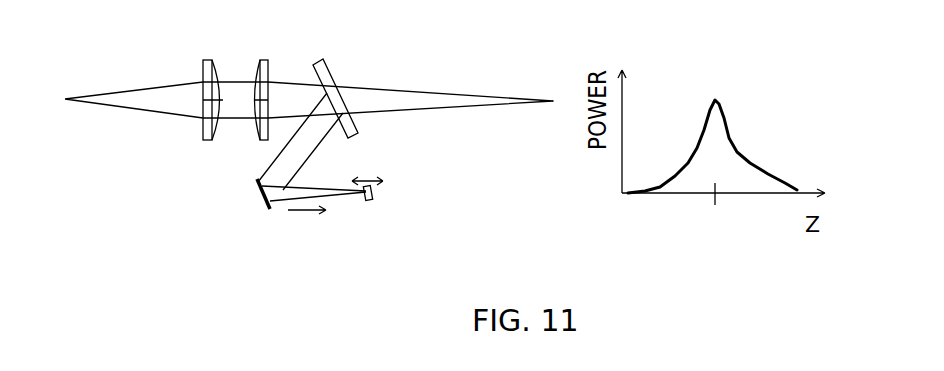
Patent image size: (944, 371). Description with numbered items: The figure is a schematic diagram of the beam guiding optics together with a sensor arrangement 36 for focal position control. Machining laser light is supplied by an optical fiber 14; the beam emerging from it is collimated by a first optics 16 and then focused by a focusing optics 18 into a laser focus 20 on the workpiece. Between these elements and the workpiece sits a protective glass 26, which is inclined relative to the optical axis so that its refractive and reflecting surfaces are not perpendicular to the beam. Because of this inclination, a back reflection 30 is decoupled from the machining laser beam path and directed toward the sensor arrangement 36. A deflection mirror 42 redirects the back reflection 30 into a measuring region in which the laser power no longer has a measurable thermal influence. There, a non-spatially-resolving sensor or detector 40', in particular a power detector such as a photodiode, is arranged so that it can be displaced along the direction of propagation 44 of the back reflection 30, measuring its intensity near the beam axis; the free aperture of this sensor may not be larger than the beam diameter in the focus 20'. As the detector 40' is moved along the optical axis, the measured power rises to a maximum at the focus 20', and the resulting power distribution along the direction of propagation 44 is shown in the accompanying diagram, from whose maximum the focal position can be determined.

The optical fiber 14 is at (72, 98).
The first optics 16 is at (208, 60).
The focusing optics 18 is at (265, 60).
The protective glass 26 is at (320, 60).
The laser focus 20 is at (541, 72).
The back reflection 30 is at (292, 152).
The sensor arrangement 36 is at (361, 172).
The deflection mirror 42 is at (262, 195).
The beam propagation direction 44 is at (302, 214).
The non-spatially-resolving sensor or detector 40' is at (388, 236).
The focus 20' is at (677, 227).